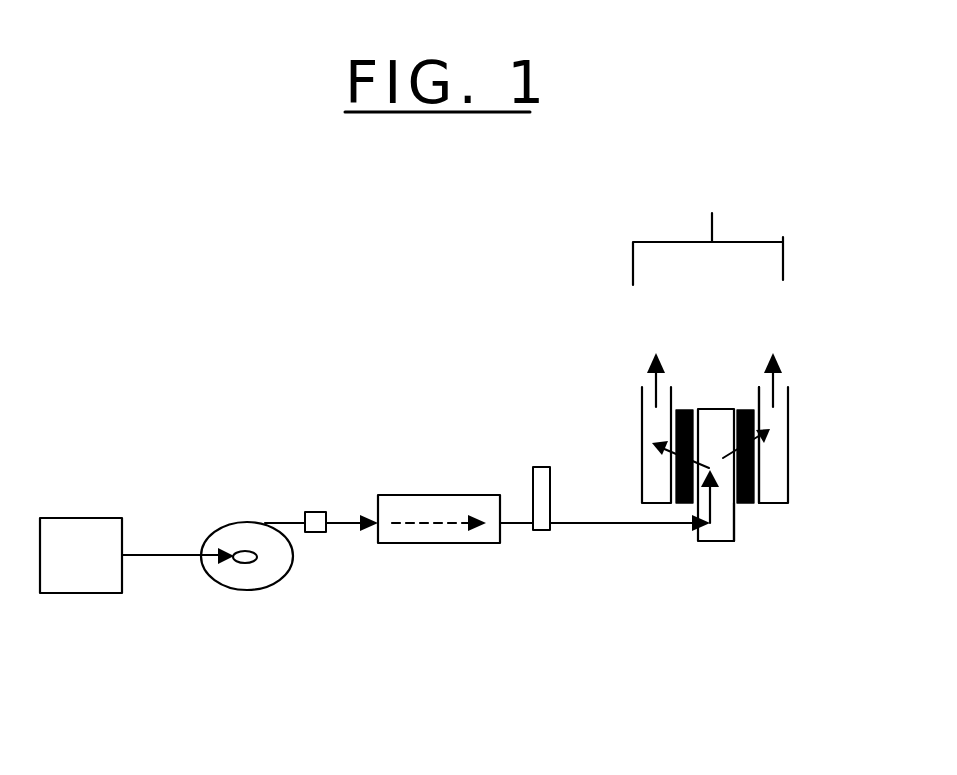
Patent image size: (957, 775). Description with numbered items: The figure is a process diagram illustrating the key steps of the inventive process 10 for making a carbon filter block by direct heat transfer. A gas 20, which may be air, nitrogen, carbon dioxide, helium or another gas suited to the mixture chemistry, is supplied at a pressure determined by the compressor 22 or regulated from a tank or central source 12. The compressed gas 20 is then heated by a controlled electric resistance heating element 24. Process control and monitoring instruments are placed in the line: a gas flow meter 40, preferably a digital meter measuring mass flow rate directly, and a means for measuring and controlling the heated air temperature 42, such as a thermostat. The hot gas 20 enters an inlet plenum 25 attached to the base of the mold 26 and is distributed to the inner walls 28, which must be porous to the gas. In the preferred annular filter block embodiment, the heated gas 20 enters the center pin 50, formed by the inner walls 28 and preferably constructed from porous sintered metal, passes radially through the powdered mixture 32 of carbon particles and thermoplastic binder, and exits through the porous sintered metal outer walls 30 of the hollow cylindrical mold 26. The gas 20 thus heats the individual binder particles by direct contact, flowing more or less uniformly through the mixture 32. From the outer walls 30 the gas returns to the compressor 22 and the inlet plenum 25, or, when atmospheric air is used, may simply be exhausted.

The process 10 is at (256, 362).
The tank or central source 12 is at (81, 555).
The gas 20 is at (167, 557).
The compressor 22 is at (253, 588).
The electric resistance heating element 24 is at (453, 547).
The inlet plenum 25 is at (715, 549).
The mold 26 is at (758, 389).
The inner walls 28 is at (733, 518).
The outer walls 30 is at (765, 423).
The powdered mixture 32 is at (747, 470).
The gas flow meter 40 is at (313, 507).
The means for measuring and controlling heated air temperature 42 is at (535, 465).
The center pin 50 is at (718, 428).